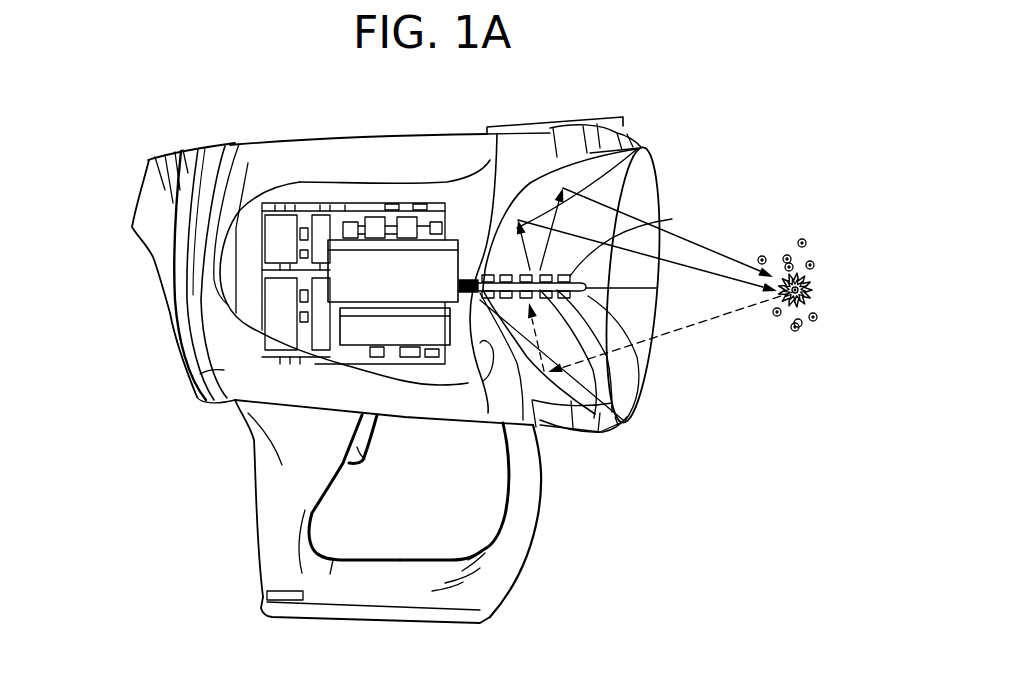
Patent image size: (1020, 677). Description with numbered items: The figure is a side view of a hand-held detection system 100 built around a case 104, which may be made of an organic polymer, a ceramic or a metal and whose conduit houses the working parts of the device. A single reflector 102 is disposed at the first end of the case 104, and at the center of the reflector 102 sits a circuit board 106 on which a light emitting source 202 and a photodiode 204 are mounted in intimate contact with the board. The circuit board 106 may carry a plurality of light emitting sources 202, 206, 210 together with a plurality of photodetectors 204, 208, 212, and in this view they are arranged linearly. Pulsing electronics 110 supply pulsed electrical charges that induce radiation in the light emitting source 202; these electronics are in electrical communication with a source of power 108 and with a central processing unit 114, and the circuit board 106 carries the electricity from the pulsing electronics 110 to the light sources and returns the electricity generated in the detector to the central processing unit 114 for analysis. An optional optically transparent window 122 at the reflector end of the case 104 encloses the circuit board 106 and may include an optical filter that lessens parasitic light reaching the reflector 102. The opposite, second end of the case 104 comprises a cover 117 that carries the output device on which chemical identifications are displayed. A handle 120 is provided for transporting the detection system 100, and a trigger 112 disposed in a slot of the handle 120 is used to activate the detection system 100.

The detection system 100 is at (583, 103).
The reflector 102 is at (478, 380).
The case 104 is at (198, 395).
The circuit board 106 is at (537, 425).
The source of power 108 is at (389, 325).
The pulsing electronics 110 is at (346, 272).
The trigger 112 is at (365, 457).
The central processing unit 114 is at (258, 162).
The cover 117 is at (156, 165).
The handle 120 is at (270, 532).
The optically transparent window 122 is at (647, 167).
The light emitting source 202 is at (600, 260).
The photodiode 204 is at (605, 302).
The light emitting source 206 is at (557, 272).
The photodetector 208 is at (630, 365).
The light emitting source 210 is at (497, 168).
The photodetector 212 is at (628, 420).